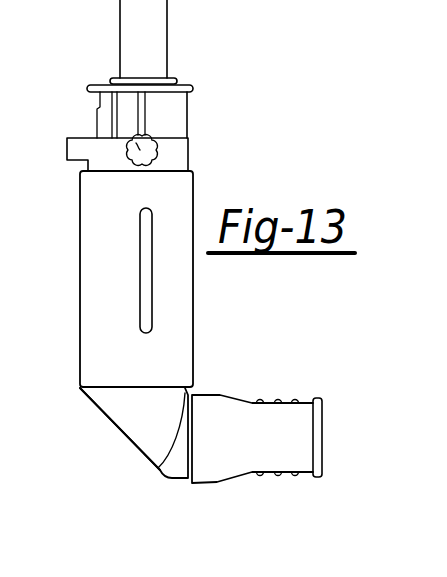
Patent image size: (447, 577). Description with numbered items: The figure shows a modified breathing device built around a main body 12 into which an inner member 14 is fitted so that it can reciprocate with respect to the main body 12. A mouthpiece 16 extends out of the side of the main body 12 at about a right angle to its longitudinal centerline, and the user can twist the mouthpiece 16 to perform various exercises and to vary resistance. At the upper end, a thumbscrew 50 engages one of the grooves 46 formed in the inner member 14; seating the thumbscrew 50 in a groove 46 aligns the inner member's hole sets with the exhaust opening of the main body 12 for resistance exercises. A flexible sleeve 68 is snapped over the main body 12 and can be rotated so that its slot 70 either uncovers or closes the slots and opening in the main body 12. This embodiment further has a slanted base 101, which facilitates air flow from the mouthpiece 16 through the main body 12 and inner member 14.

The main body 12 is at (106, 416).
The inner member 14 is at (167, 120).
The mouthpiece 16 is at (269, 434).
The grooves 46 is at (133, 107).
The thumbscrew 50 is at (107, 137).
The flexible sleeve 68 is at (107, 306).
The slot 70 is at (148, 260).
The slanted base 101 is at (123, 437).